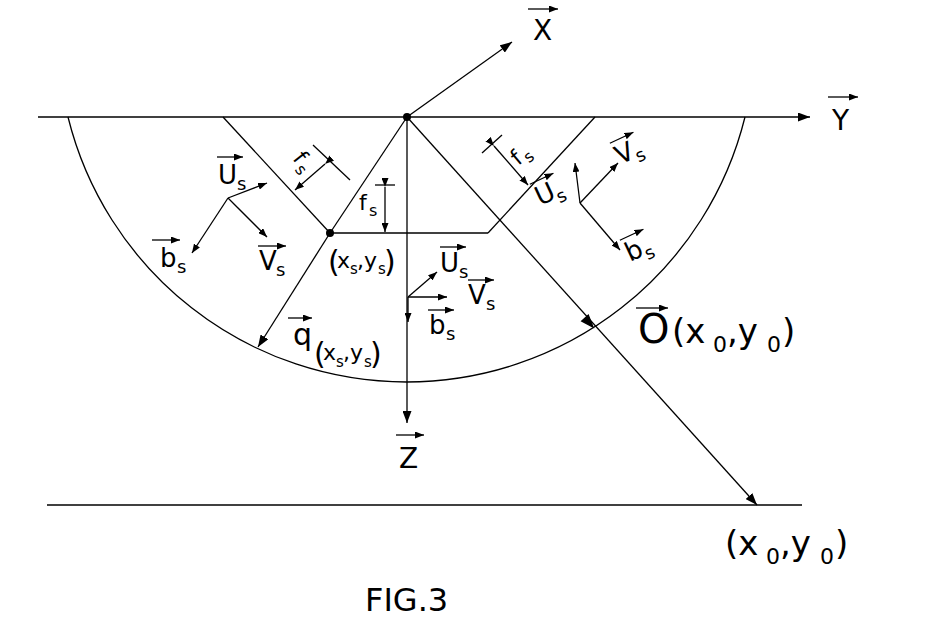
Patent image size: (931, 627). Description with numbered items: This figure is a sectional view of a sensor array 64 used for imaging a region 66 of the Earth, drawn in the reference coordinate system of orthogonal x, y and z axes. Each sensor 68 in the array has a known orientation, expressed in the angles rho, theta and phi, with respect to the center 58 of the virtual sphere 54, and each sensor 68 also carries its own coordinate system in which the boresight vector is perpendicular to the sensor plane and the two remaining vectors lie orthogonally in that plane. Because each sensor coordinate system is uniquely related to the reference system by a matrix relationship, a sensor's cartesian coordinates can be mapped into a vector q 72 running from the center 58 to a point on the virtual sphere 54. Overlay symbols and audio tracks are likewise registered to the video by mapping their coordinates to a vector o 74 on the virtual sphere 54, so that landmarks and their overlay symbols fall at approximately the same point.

The virtual sphere 54 is at (700, 227).
The center of the virtual sphere 58 is at (407, 117).
The sensor array 64 is at (190, 146).
The region 66 is at (120, 505).
The sensor 68 is at (563, 147).
The vector q(s,xs,ys) 72 is at (286, 303).
The vector o(xo,yo) 74 is at (557, 282).